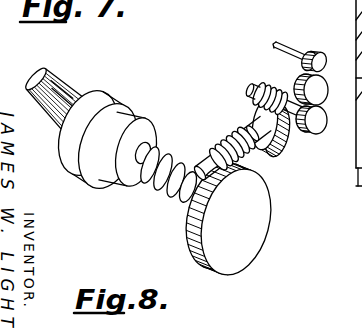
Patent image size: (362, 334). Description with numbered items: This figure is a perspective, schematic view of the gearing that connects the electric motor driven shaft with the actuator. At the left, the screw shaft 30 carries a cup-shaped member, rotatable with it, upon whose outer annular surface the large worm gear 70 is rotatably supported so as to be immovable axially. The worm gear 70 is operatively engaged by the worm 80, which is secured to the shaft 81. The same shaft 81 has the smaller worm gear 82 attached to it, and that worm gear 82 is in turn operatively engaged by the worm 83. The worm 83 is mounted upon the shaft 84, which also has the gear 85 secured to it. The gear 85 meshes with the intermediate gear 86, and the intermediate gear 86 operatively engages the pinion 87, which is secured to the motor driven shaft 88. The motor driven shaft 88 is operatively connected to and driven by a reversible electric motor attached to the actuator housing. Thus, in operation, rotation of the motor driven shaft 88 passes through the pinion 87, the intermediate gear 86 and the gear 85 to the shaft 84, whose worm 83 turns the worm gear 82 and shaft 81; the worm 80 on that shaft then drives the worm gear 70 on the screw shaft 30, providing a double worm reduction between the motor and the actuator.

The screw shaft 30 is at (166, 187).
The worm gear 70 is at (242, 238).
The worm 80 is at (223, 148).
The shaft 81 is at (232, 125).
The worm gear 82 is at (277, 147).
The worm 83 is at (241, 97).
The shaft 84 is at (292, 100).
The gear 85 is at (314, 130).
The intermediate gear 86 is at (320, 90).
The pinion 87 is at (320, 55).
The motor driven shaft 88 is at (290, 33).